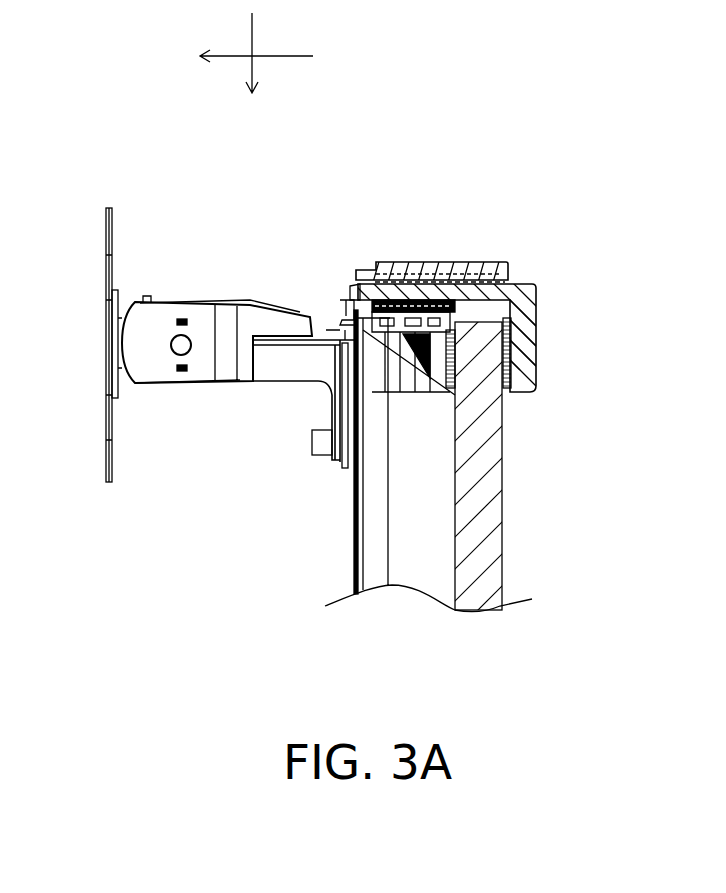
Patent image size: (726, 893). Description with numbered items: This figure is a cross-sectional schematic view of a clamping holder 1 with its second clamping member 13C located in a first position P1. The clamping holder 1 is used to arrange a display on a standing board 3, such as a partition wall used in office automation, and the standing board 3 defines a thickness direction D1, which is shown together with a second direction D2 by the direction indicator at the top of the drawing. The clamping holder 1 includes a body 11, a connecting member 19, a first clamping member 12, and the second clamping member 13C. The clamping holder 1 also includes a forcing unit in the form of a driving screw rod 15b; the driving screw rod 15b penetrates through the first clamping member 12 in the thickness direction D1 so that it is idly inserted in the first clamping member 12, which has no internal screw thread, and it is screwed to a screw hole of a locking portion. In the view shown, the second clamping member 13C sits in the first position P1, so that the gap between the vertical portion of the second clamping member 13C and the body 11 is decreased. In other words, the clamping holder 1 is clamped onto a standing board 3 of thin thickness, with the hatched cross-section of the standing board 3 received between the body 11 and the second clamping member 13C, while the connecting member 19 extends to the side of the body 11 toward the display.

The clamping holder 1 is at (481, 156).
The standing board 3 is at (487, 561).
The body 11 is at (368, 503).
The first clamping member 12 is at (470, 262).
The second clamping member 13C is at (522, 298).
The driving screw rod 15b is at (352, 288).
The connecting member 19 is at (112, 228).
The first position P1 is at (530, 411).
The thickness direction D1 is at (236, 59).
The second direction D2 is at (253, 73).